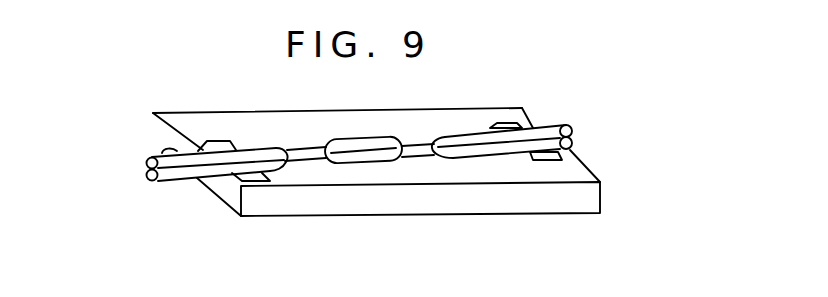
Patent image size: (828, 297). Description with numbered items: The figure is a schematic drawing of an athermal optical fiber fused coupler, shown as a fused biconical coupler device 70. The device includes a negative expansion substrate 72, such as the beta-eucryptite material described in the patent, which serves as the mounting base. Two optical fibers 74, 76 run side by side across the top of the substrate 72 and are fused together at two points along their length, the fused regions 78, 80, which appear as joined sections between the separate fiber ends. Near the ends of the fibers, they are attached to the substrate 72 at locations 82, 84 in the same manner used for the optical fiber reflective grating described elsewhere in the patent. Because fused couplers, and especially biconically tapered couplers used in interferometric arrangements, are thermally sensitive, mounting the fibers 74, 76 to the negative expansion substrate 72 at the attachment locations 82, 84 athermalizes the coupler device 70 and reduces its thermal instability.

The fused biconical coupler device 70 is at (191, 223).
The negative expansion substrate 72 is at (593, 199).
The fiber 74 is at (152, 150).
The fiber 76 is at (176, 182).
The fused region 78 is at (301, 149).
The fused region 80 is at (421, 146).
The attachment location 82 is at (209, 141).
The attachment location 84 is at (508, 122).